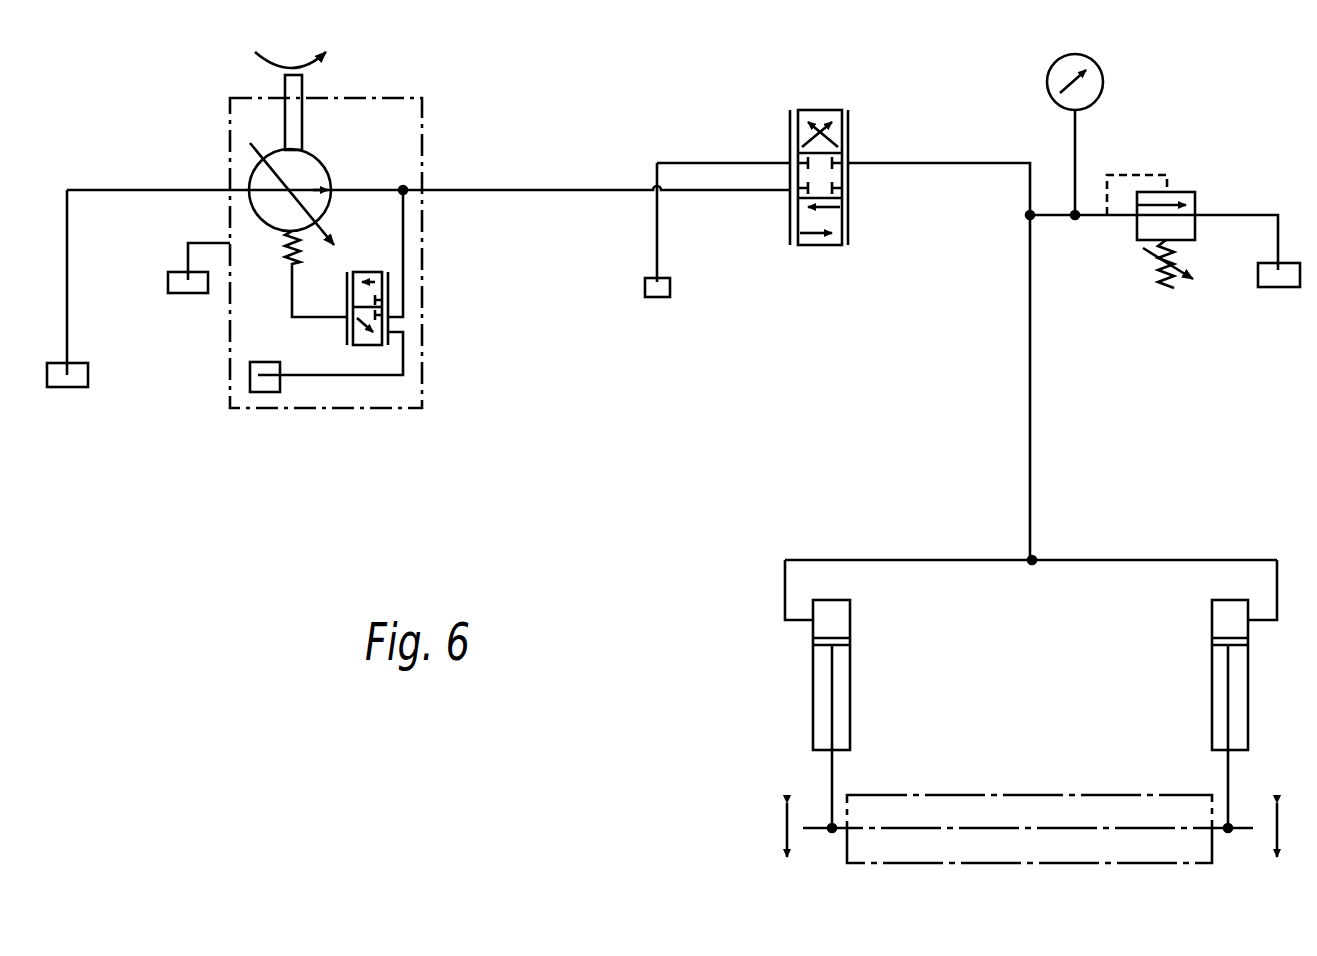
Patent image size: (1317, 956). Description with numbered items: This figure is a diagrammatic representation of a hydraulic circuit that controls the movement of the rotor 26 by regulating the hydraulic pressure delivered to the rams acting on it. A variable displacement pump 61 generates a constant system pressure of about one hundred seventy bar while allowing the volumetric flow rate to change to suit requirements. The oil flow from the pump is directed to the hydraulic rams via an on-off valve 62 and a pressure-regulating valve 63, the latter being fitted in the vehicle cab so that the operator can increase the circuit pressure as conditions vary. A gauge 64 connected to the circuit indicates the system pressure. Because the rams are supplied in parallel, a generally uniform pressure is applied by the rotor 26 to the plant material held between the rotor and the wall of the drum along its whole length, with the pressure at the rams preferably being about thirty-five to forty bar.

The variable displacement pump 61 is at (377, 86).
The on-off valve 62 is at (822, 110).
The pressure-regulating valve 63 is at (1194, 170).
The gauge 64 is at (1103, 78).
The rotor 26 is at (1042, 786).